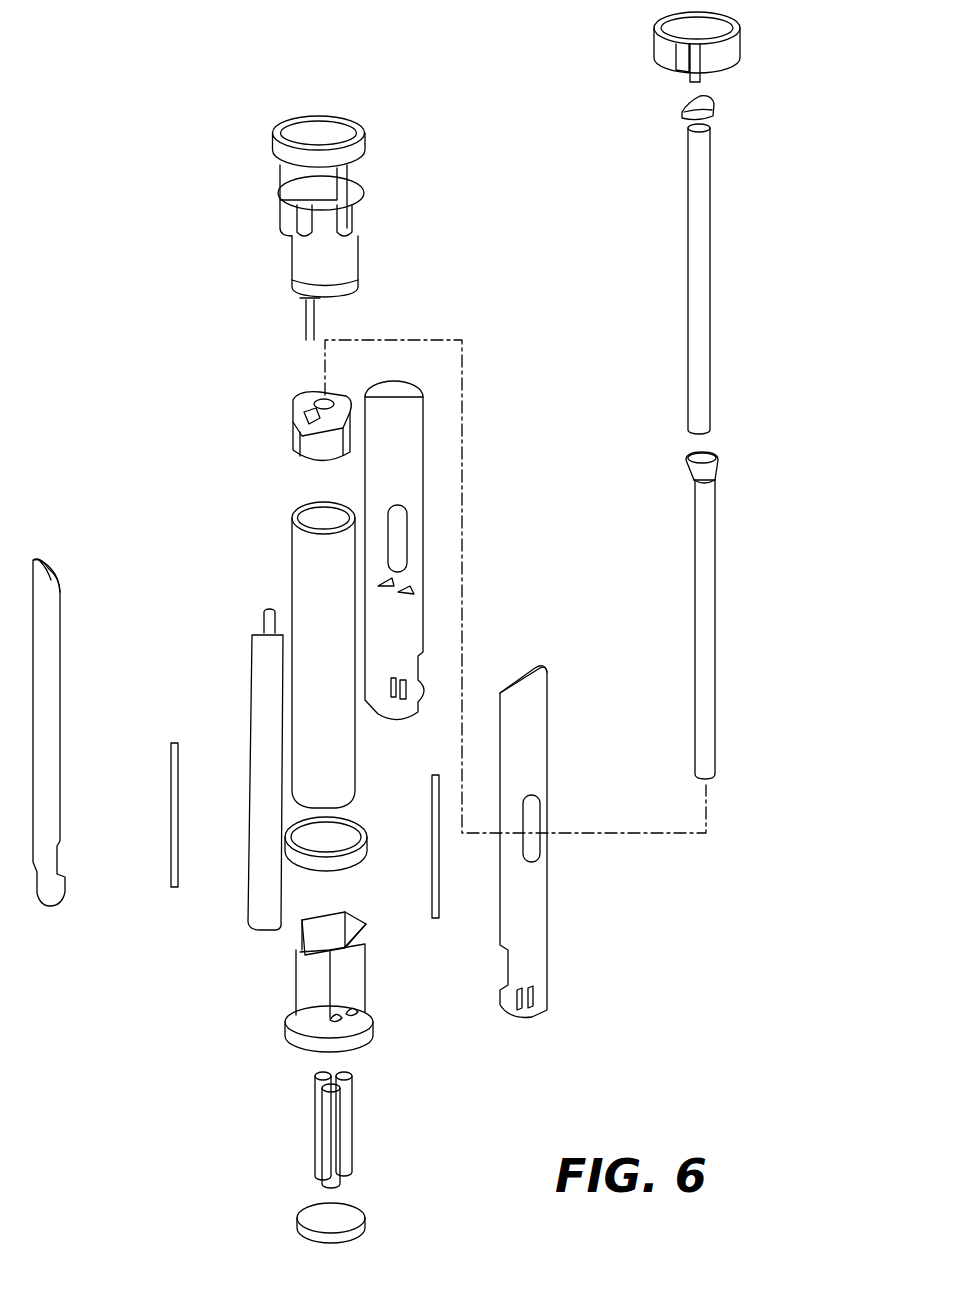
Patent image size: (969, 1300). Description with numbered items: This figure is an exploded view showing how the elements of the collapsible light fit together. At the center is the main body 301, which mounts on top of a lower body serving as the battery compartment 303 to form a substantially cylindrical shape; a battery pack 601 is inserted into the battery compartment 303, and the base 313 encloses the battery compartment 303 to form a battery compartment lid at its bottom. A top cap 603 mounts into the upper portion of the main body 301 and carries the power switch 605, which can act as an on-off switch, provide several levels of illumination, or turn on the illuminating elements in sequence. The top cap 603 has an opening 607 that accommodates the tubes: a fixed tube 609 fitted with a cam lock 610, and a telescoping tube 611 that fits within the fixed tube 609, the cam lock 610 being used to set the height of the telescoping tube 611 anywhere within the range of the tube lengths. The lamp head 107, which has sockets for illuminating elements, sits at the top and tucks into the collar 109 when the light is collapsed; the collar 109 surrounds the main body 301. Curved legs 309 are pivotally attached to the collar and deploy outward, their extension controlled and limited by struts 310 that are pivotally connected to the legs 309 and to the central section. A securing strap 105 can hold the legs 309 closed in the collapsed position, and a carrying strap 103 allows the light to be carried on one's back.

The carrying strap 103 is at (266, 711).
The securing strap 105 is at (380, 868).
The lamp head 107 is at (748, 46).
The collar 109 is at (300, 253).
The main body 301 is at (306, 580).
The battery compartment 303 is at (318, 989).
The legs 309 is at (45, 700).
The struts 310 is at (152, 842).
The base 313 is at (318, 1215).
The battery pack 601 is at (328, 1115).
The top cap 603 is at (256, 403).
The power switch 605 is at (302, 432).
The opening 607 is at (362, 340).
The fixed tube 609 is at (745, 596).
The cam lock 610 is at (704, 458).
The telescoping tube 611 is at (712, 230).